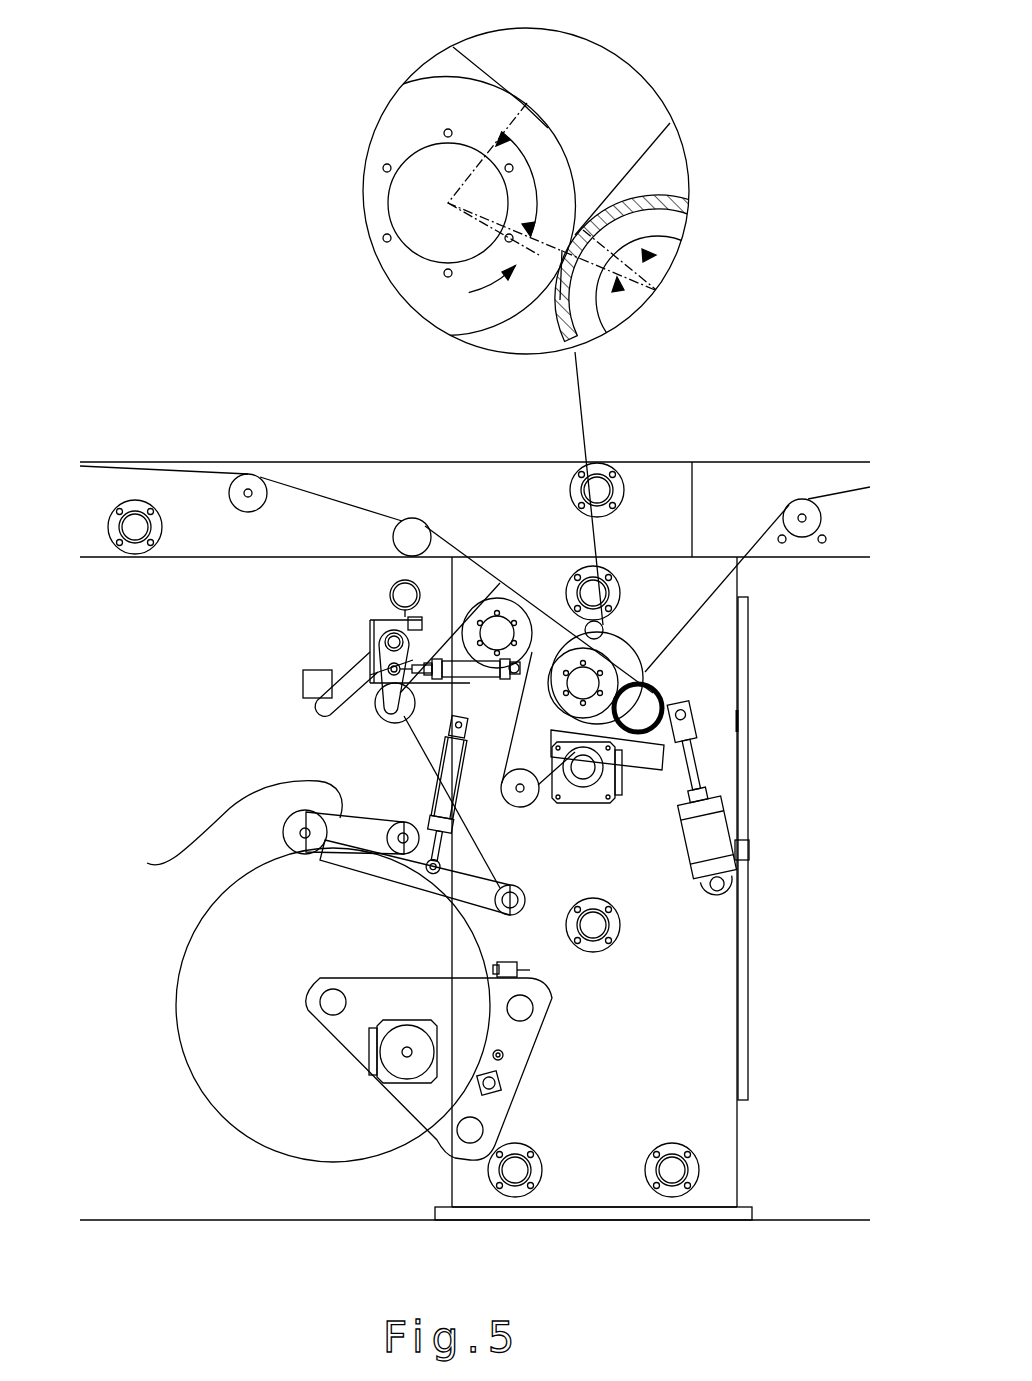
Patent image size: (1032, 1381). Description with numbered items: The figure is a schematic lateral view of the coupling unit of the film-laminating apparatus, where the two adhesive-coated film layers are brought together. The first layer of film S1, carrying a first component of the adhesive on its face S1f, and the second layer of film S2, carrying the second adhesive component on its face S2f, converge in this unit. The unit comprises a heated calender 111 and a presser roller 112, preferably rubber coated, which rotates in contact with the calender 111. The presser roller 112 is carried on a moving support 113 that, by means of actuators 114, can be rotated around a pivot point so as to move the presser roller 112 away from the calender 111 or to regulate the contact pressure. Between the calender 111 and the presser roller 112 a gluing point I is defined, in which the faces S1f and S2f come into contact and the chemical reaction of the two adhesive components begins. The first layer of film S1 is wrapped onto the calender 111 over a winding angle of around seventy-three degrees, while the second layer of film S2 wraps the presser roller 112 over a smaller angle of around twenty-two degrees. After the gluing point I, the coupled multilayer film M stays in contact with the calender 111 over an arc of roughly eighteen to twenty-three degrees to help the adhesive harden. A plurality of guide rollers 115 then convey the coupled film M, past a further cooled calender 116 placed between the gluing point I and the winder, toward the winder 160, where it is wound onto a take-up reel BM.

The heated calender 111 is at (403, 125).
The presser roller 112 is at (653, 693).
The moving support 113 is at (638, 747).
The actuators 114 is at (707, 837).
The guide rollers 115 is at (526, 795).
The cooled calender 116 is at (493, 628).
The winder 160 is at (548, 1073).
The first layer of film S1 is at (453, 48).
The face of the first layer of film S1f is at (334, 482).
The second layer of film S2 is at (645, 140).
The face of the second layer of film S2f is at (757, 500).
The coupled multilayer film M is at (517, 330).
The take-up reel BM is at (217, 993).
The gluing point I is at (562, 255).